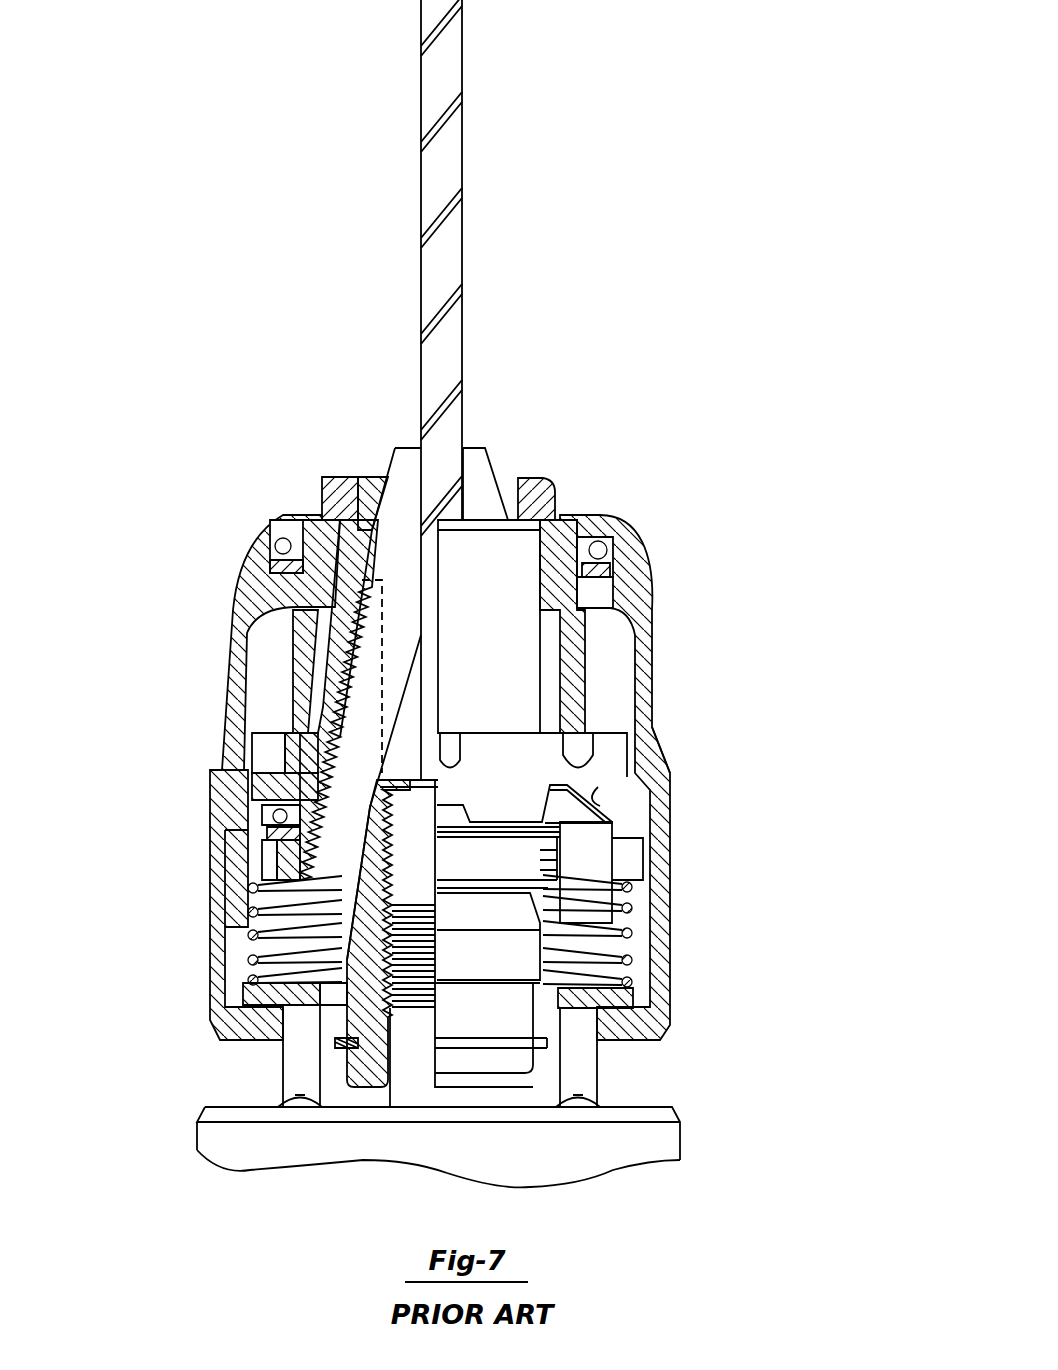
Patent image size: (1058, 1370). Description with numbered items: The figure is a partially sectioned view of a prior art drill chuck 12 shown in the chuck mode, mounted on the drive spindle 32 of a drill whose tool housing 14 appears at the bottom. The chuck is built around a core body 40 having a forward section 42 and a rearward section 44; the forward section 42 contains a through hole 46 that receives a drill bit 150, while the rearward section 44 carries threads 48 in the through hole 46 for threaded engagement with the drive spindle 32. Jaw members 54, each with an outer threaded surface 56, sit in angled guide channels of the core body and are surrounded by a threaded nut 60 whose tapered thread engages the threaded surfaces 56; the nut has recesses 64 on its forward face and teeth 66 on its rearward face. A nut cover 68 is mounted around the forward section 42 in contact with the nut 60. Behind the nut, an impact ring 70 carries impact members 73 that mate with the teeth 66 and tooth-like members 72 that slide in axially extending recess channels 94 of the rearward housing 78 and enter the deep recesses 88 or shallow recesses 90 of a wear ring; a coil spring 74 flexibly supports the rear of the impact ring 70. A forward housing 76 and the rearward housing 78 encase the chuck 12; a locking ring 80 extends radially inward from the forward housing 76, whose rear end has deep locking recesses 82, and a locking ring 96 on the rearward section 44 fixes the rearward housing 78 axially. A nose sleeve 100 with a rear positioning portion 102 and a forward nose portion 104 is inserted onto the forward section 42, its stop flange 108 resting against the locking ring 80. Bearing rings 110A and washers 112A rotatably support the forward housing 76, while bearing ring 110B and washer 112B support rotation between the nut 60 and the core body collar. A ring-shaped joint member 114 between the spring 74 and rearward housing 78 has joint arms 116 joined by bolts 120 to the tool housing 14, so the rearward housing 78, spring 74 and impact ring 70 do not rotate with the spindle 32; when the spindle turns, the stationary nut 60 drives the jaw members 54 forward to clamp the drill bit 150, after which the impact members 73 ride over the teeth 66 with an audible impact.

The drill chuck 12 is at (762, 655).
The tool housing 14 is at (683, 1143).
The drive spindle 32 is at (413, 1095).
The core body 40 is at (505, 673).
The forward section 42 is at (370, 516).
The rearward section 44 is at (503, 960).
The through hole 46 is at (512, 497).
The threads 48 is at (392, 1035).
The jaw members 54 is at (407, 442).
The threaded surface 56 is at (300, 620).
The threaded nut 60 is at (270, 728).
The recesses 64 is at (590, 752).
The teeth 66 is at (256, 814).
The nut cover 68 is at (305, 648).
The impact ring 70 is at (630, 857).
The tooth-like members 72 is at (627, 910).
The impact members 73 is at (232, 855).
The coil spring 74 is at (243, 933).
The forward housing 76 is at (245, 553).
The rearward housing 78 is at (660, 957).
The locking ring 80 is at (603, 603).
The deep locking recesses 82 is at (622, 808).
The deep recesses 88 is at (615, 802).
The shallow recesses 90 is at (450, 815).
The recess channels 94 is at (233, 1000).
The locking ring 96 is at (335, 1042).
The nose sleeve 100 is at (586, 513).
The positioning portion 102 is at (322, 594).
The nose portion 104 is at (540, 494).
The stop flange 108 is at (295, 518).
The bearing rings 110A is at (613, 538).
The bearing ring 110B is at (258, 815).
The washers 112A is at (613, 566).
The washer 112B is at (258, 832).
The joint member 114 is at (643, 997).
The joint arms 116 is at (600, 1078).
The bolts 120 is at (290, 1107).
The drill bit 150 is at (445, 183).